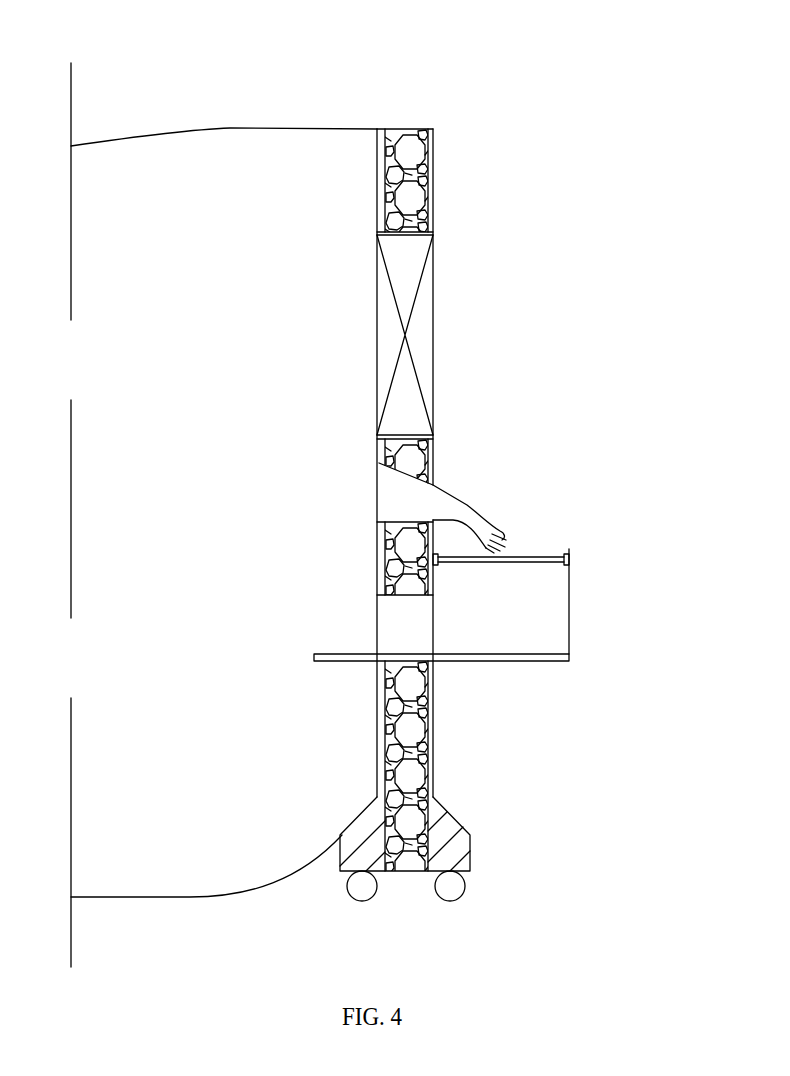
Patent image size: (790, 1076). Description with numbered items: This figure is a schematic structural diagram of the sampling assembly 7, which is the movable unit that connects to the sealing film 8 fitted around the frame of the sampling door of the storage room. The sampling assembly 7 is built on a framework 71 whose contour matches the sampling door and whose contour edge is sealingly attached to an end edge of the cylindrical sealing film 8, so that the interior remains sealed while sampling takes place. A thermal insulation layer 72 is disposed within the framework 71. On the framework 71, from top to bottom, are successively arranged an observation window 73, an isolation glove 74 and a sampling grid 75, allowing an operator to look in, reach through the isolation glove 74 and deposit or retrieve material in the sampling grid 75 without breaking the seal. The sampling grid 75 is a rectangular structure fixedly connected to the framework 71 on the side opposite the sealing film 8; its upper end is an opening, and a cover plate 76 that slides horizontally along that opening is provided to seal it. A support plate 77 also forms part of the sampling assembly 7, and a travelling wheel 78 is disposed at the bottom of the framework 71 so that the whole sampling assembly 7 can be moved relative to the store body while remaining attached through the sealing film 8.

The sealing film 8 is at (225, 128).
The sampling assembly 7 is at (433, 742).
The framework 71 is at (425, 178).
The thermal insulation layer 72 is at (407, 462).
The observation window 73 is at (407, 337).
The isolation glove 74 is at (487, 525).
The sampling grid 75 is at (545, 625).
The cover plate 76 is at (533, 558).
The support plate 77 is at (347, 653).
The travelling wheel 78 is at (450, 857).